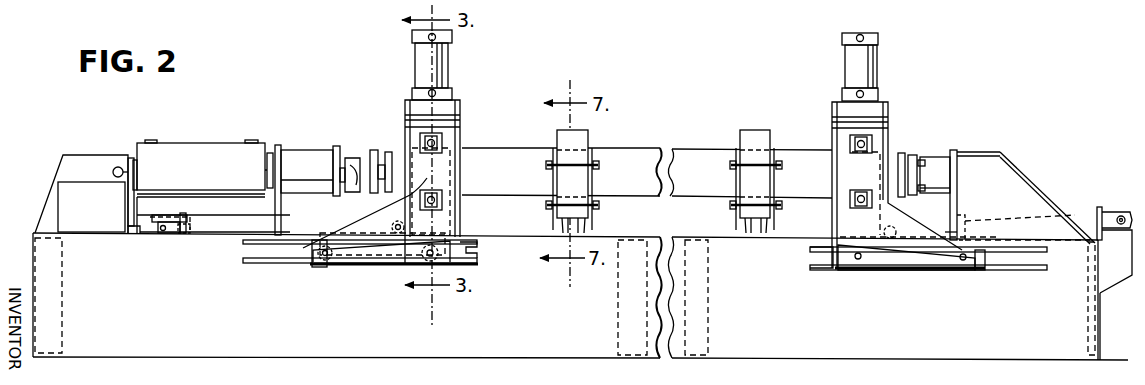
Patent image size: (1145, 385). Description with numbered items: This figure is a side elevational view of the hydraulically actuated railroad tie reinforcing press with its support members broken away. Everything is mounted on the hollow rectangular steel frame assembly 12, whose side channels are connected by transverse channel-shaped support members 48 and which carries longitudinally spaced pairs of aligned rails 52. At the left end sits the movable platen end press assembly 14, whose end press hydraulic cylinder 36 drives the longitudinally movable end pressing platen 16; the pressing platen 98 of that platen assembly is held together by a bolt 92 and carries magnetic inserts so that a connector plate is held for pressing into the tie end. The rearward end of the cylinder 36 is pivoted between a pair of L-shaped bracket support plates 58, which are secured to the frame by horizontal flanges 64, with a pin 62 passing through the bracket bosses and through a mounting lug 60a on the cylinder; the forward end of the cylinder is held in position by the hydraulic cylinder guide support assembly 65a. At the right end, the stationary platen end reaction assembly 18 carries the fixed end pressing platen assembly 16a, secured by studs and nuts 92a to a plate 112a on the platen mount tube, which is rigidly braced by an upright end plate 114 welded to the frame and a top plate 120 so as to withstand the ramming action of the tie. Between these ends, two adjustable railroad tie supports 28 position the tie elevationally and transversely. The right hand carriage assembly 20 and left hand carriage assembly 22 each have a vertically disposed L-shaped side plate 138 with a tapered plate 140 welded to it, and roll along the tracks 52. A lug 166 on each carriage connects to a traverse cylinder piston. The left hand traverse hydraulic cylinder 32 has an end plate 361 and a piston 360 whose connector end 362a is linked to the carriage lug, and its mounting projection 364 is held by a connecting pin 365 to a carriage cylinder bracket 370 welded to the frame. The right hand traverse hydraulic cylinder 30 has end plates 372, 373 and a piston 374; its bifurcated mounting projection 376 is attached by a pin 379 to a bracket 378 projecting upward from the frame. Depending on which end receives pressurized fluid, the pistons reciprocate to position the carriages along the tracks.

The tie press frame assembly 12 is at (531, 321).
The movable platen end press assembly 14 is at (200, 140).
The end pressing platen 16 is at (337, 185).
The end pressing platen assembly 16a is at (904, 153).
The stationary platen end reaction assembly 18 is at (984, 129).
The right hand carriage assembly 20 is at (866, 276).
The left hand carriage assembly 22 is at (356, 265).
The adjustable railroad tie supports 28 is at (599, 181).
The right hand traverse hydraulic cylinder 30 is at (1079, 207).
The left hand traverse hydraulic cylinder 32 is at (222, 215).
The end press hydraulic cylinder 36 is at (183, 178).
The transverse support members 48 is at (62, 323).
The rails 52 is at (306, 264).
The hydraulic cylinder bracket support plates 58 is at (60, 170).
The mounting lug 60a is at (131, 158).
The pin 62 is at (117, 167).
The horizontal flanges 64 is at (56, 211).
The hydraulic cylinder guide support assembly 65a is at (302, 148).
The bolt 92 is at (360, 163).
The studs and nuts 92a is at (937, 157).
The pressing platen 98 is at (388, 152).
The plate 112a is at (906, 198).
The end plate 114 is at (957, 173).
The top plate 120 is at (985, 152).
The side plate 138 is at (446, 184).
The tapered plate 140 is at (386, 263).
The lug 166 is at (888, 232).
The piston 360 is at (365, 213).
The end plate 361 is at (277, 262).
The lever 362a is at (195, 237).
The mounting projection 364 is at (172, 238).
The shaft 365 is at (162, 236).
The carriage cylinder bracket 370 is at (124, 237).
The end plate 372 is at (966, 217).
The end plate 373 is at (1094, 206).
The piston 374 is at (945, 231).
The bifurcated mounting projection 376 is at (1116, 290).
The bracket 378 is at (1122, 300).
The pin 379 is at (1119, 215).